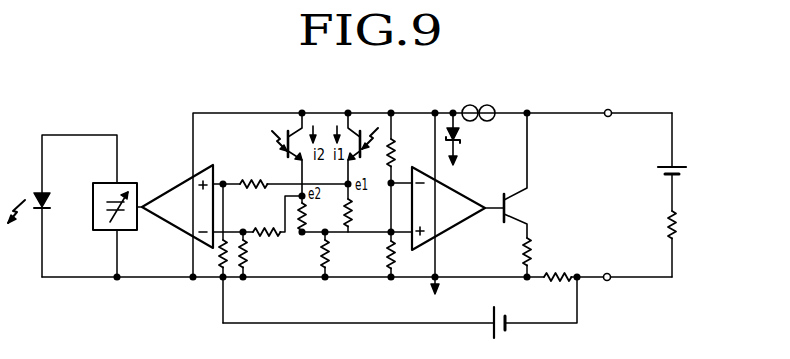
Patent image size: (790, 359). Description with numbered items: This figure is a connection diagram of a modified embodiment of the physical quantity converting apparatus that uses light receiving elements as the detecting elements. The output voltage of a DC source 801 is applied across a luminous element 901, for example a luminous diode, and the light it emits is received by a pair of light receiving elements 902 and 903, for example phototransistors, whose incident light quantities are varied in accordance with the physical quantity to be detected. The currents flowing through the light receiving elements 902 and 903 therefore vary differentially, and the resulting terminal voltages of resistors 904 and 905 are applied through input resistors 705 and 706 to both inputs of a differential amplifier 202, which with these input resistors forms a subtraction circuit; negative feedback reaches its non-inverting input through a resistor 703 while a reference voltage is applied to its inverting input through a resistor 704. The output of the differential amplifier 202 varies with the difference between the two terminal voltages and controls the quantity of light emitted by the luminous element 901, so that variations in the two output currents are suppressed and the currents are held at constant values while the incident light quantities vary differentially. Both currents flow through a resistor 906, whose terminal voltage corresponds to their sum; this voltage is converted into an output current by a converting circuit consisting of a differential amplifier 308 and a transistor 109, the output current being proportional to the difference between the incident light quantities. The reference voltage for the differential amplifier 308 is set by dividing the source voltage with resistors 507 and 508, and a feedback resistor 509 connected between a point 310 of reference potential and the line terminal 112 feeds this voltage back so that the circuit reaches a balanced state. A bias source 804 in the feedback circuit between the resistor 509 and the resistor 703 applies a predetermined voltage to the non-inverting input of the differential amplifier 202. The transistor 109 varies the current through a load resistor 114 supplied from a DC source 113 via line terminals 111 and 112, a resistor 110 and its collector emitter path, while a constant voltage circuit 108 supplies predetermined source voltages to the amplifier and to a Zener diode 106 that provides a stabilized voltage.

The luminous element 901 is at (64, 207).
The DC source 801 is at (118, 195).
The differential amplifier 202 is at (177, 206).
The input resistor 705 is at (254, 173).
The input resistor 706 is at (267, 221).
The resistor 703 is at (212, 253).
The resistor 704 is at (255, 256).
The light receiving element 903 is at (301, 121).
The light receiving element 902 is at (350, 121).
The resistor 904 is at (315, 214).
The resistor 905 is at (361, 208).
The resistor 906 is at (337, 256).
The resistor 507 is at (404, 171).
The resistor 508 is at (404, 256).
The differential amplifier 308 is at (458, 208).
The point of reference potential 310 is at (446, 210).
The Zener diode 106 is at (466, 137).
The constant voltage circuit 108 is at (478, 103).
The transistor 109 is at (525, 174).
The resistor 110 is at (541, 257).
The feedback resistor 509 is at (562, 289).
The line terminal 111 is at (609, 101).
The line terminal 112 is at (609, 290).
The DC source 113 is at (680, 162).
The load resistor 114 is at (686, 244).
The bias source 804 is at (400, 318).